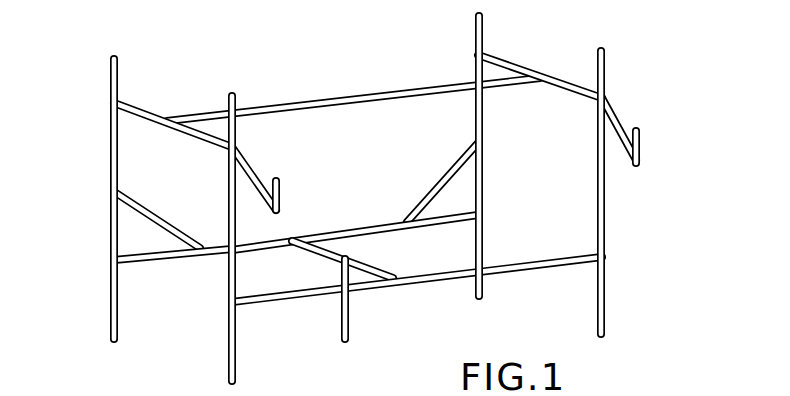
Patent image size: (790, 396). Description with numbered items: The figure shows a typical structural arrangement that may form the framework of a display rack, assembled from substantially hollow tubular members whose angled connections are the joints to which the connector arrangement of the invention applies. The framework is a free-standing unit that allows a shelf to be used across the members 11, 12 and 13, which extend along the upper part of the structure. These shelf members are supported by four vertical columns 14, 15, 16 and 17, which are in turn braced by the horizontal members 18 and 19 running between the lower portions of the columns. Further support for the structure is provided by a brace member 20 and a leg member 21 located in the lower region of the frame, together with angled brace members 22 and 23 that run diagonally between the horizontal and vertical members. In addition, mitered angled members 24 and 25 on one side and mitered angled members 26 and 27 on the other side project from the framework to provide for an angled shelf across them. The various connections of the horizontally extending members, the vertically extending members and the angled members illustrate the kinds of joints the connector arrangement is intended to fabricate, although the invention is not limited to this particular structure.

The shelf support member 11 is at (145, 112).
The shelf support member 12 is at (323, 98).
The shelf support member 13 is at (505, 58).
The vertical column 14 is at (113, 213).
The vertical column 15 is at (229, 328).
The vertical column 16 is at (483, 163).
The vertical column 17 is at (607, 270).
The horizontal member 18 is at (173, 258).
The horizontal member 19 is at (568, 262).
The brace member 20 is at (372, 263).
The leg member 21 is at (353, 300).
The angled brace member 22 is at (161, 212).
The angled brace member 23 is at (445, 173).
The mitered angled member 24 is at (253, 165).
The mitered angled member 25 is at (283, 192).
The mitered angled member 26 is at (613, 120).
The mitered angled member 27 is at (641, 147).